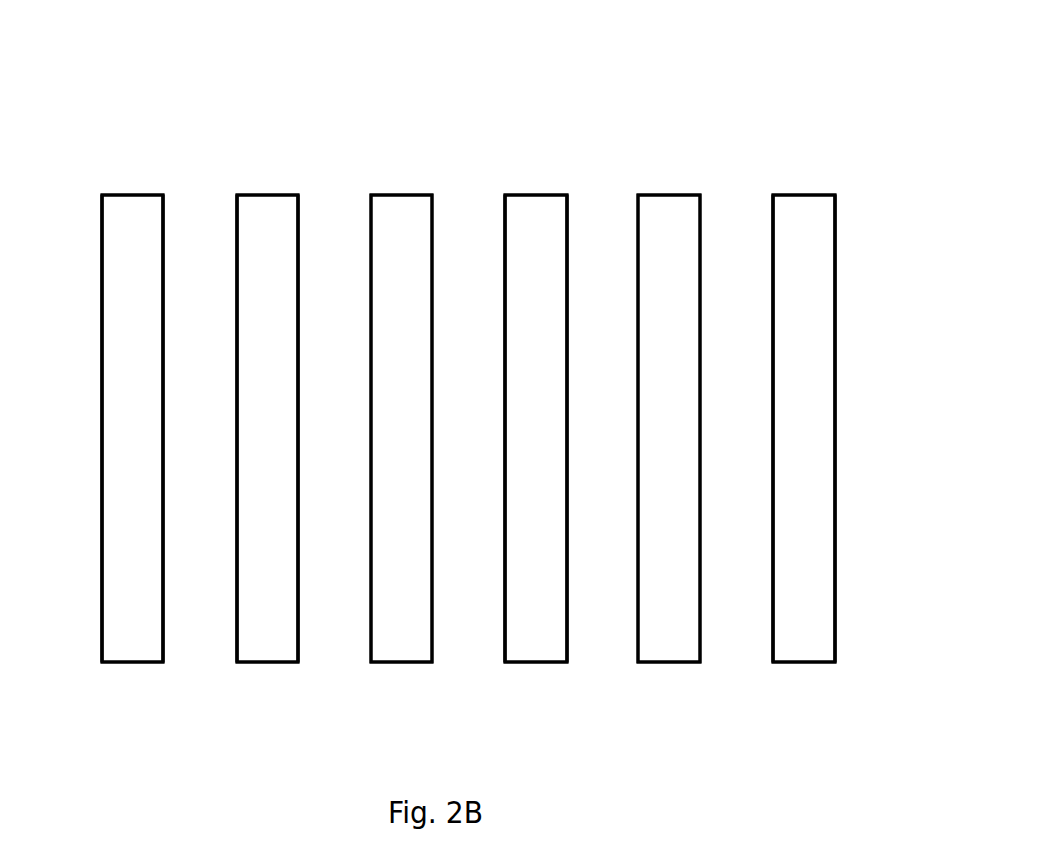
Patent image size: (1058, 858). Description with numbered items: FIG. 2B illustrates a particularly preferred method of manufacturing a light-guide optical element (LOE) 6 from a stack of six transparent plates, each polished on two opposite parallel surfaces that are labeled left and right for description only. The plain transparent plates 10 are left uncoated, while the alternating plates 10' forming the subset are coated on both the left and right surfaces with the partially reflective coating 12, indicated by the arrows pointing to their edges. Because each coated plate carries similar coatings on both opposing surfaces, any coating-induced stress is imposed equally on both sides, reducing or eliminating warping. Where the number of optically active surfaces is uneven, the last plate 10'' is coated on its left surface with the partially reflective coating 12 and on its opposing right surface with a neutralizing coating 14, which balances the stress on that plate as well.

The array of strip elements 6 is at (120, 75).
The transparent plate 10 is at (510, 457).
The plate in the subset 10' is at (515, 457).
The plate coated with neutralizing coating 10'' is at (106, 457).
The partially reflective coating 12 is at (224, 224).
The neutralizing coating 14 is at (177, 279).